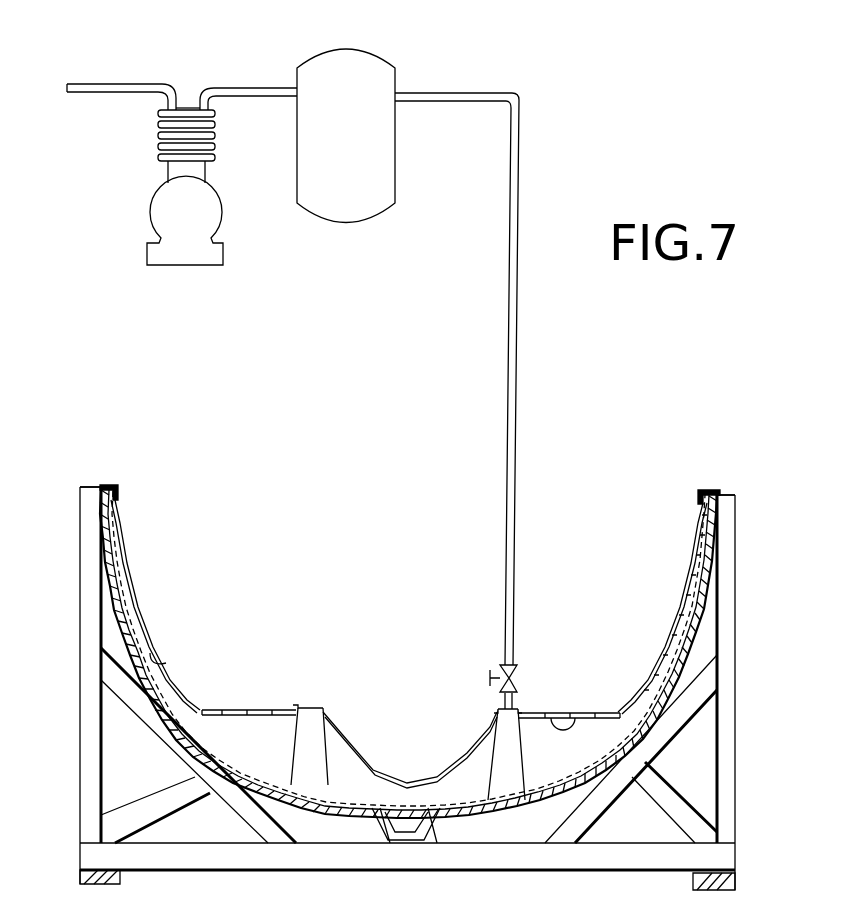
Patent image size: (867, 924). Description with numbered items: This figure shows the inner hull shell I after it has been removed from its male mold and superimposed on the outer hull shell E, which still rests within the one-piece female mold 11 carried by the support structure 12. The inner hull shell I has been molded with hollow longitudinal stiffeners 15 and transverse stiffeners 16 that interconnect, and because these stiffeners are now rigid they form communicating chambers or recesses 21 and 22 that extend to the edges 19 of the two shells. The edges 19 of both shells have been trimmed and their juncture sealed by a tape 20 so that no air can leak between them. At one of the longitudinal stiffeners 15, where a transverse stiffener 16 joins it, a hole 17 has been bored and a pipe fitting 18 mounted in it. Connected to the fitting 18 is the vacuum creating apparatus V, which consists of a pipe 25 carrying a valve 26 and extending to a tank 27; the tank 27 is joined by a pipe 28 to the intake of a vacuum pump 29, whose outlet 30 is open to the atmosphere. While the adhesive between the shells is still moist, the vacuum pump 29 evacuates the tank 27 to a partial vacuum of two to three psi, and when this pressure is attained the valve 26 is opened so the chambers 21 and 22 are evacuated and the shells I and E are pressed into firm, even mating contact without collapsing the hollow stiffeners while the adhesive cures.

The female mold 11 is at (113, 586).
The support structure 12 is at (92, 674).
The longitudinal stiffeners 15 is at (312, 705).
The transverse stiffeners 16 is at (233, 708).
The hole 17 is at (510, 708).
The pipe fitting 18 is at (503, 700).
The edges 19 is at (96, 487).
The tape 20 is at (109, 485).
The communicating chambers 21 is at (310, 752).
The communicating chambers 22 is at (168, 662).
The pipe 25 is at (514, 604).
The valve 26 is at (490, 683).
The tank 27 is at (355, 222).
The pipe 28 is at (238, 89).
The vacuum pump 29 is at (150, 211).
The outlet 30 is at (80, 92).
The vacuum creating apparatus V is at (188, 102).
The inner hull shell I is at (693, 549).
The outer hull shell E is at (690, 631).